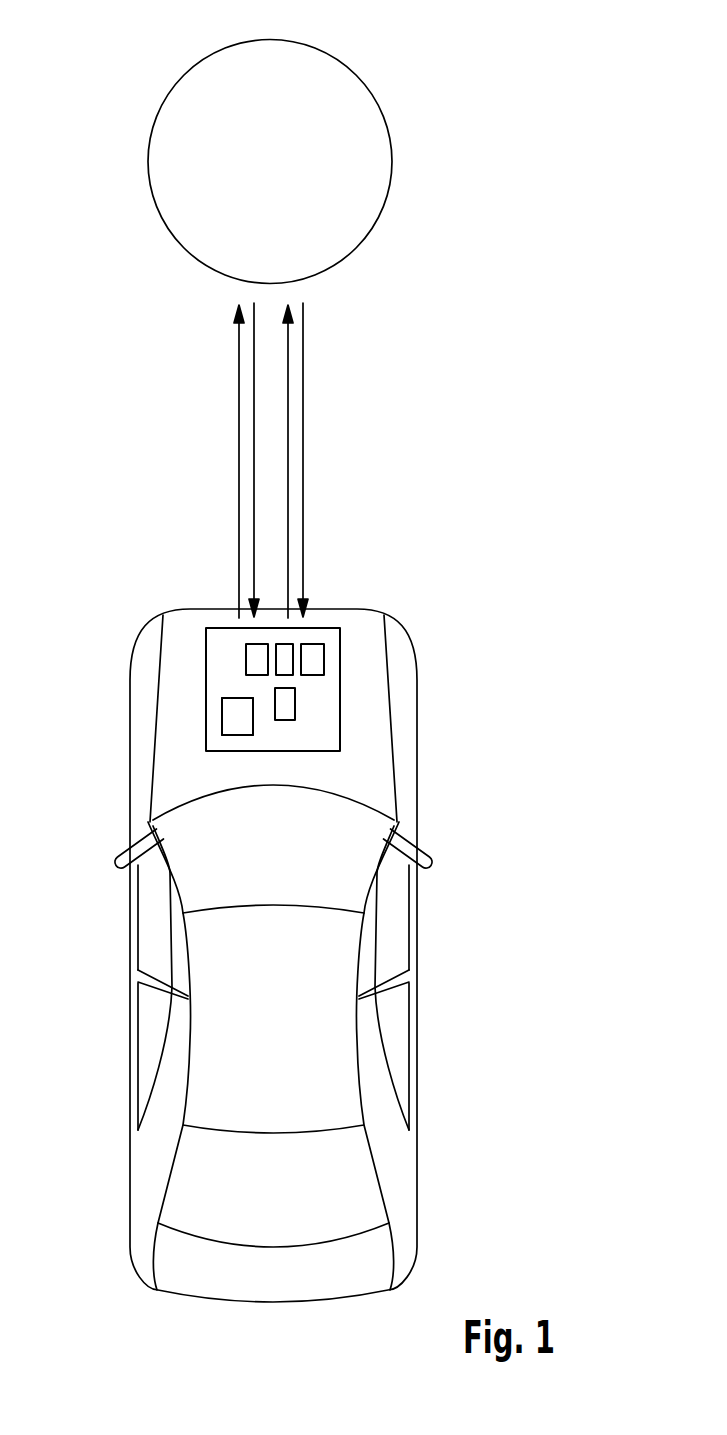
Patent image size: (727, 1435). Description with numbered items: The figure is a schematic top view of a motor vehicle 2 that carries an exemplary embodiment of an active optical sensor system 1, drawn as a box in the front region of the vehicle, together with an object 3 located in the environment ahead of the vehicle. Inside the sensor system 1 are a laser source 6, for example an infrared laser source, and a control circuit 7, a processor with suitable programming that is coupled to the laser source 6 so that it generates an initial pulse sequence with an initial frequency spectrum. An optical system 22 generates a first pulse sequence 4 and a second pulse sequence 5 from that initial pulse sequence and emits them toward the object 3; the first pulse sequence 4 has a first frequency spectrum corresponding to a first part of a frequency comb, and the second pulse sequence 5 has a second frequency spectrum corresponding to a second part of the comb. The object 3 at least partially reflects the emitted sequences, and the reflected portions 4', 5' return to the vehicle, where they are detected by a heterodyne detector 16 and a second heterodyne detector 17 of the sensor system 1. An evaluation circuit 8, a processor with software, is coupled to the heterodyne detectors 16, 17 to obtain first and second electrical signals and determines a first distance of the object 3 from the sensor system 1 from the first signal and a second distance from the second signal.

The active optical sensor system 1 is at (323, 626).
The motor vehicle 2 is at (417, 926).
The object 3 is at (392, 161).
The first pulse sequence 4 is at (209, 461).
The reflected portion of the first pulse sequence 4' is at (223, 460).
The second pulse sequence 5 is at (319, 461).
The reflected portion of the second pulse sequence 5' is at (337, 460).
The laser source 6 is at (288, 703).
The control circuit 7 is at (232, 722).
The evaluation circuit 8 is at (237, 716).
The heterodyne detector 16 is at (253, 657).
The second heterodyne detector 17 is at (318, 658).
The optical system 22 is at (283, 672).